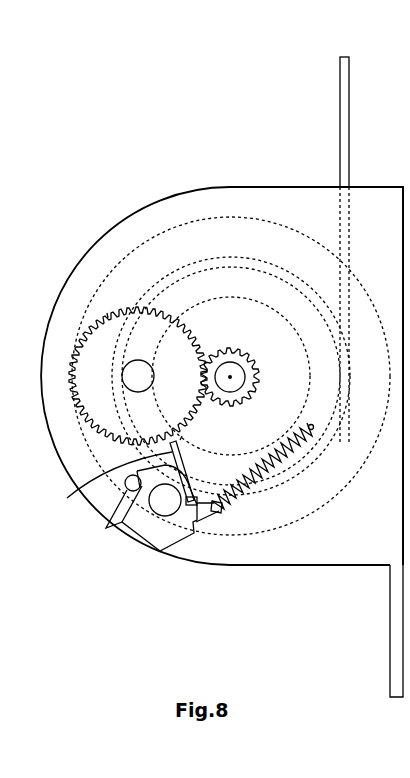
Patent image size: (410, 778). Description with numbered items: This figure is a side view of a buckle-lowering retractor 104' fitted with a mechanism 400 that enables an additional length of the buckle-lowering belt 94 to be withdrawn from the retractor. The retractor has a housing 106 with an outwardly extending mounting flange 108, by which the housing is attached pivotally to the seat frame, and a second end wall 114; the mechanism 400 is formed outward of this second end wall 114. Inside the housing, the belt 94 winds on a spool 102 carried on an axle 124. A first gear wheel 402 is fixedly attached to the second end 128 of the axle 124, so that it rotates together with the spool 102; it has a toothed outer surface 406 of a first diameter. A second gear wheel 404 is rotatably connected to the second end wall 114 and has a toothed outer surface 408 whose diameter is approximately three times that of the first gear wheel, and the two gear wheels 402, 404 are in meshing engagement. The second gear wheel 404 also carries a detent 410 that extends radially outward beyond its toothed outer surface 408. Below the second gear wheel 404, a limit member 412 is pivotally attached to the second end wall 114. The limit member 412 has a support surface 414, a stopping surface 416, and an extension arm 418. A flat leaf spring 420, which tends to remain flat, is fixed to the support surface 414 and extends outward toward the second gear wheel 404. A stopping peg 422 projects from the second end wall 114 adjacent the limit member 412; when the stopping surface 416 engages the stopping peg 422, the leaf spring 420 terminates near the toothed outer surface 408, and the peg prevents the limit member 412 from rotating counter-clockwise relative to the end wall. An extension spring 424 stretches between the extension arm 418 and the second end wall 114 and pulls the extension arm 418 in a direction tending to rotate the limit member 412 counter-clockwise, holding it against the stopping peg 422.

The buckle-lowering belt 94 is at (341, 77).
The spool 102 is at (193, 248).
The buckle-lowering retractor 104' is at (222, 342).
The housing 106 is at (308, 575).
The mounting flange 108 is at (384, 670).
The second end wall 114 is at (340, 543).
The axle 124 is at (243, 358).
The second end 128 is at (229, 372).
The mechanism 400 is at (137, 580).
The first gear wheel 402 is at (268, 349).
The second gear wheel 404 is at (99, 344).
The toothed outer surface 406 is at (262, 379).
The toothed outer surface 408 is at (108, 318).
The detent 410 is at (180, 440).
The limit member 412 is at (167, 550).
The support surface 414 is at (198, 524).
The stopping surface 416 is at (115, 533).
The extension arm 418 is at (218, 511).
The leaf spring 420 is at (126, 479).
The stopping peg 422 is at (136, 492).
The extension spring 424 is at (298, 472).